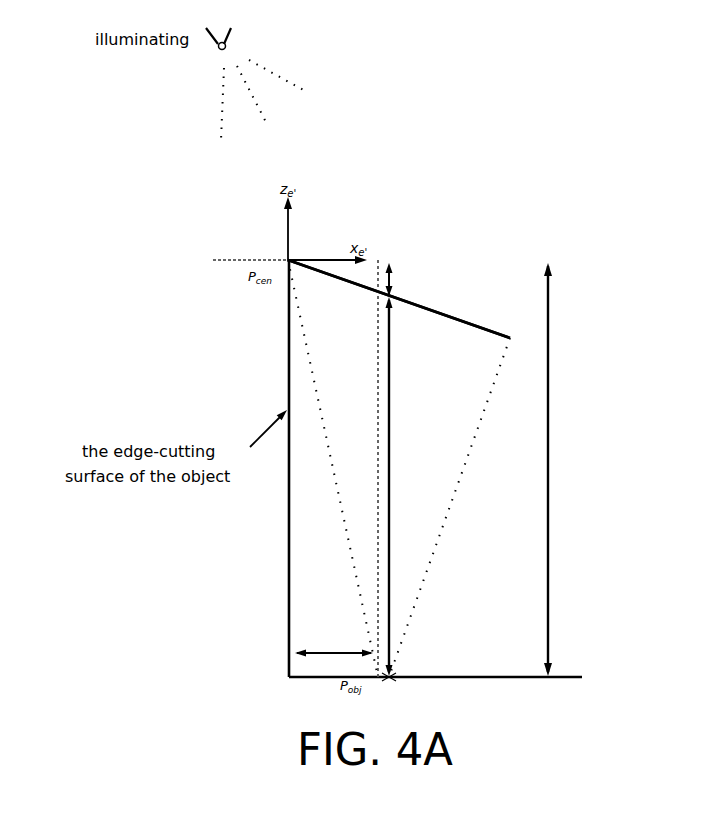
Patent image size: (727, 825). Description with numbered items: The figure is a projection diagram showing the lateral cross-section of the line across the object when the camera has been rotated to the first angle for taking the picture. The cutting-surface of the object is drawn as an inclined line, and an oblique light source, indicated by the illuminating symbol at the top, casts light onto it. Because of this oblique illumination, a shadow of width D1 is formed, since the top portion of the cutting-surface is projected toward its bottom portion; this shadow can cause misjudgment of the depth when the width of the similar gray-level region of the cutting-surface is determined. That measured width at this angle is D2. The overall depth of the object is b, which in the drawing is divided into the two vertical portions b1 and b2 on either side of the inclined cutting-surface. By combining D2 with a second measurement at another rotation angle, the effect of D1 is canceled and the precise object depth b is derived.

The depth of the object b is at (531, 469).
The height offset of edge-cutting surface b1 is at (401, 279).
The height of edge-cutting surface b2 is at (400, 486).
The width of the shadow caused by the oblique light D1 is at (334, 642).
The width of the similar gray-level region of cutting-surface D2 is at (399, 299).